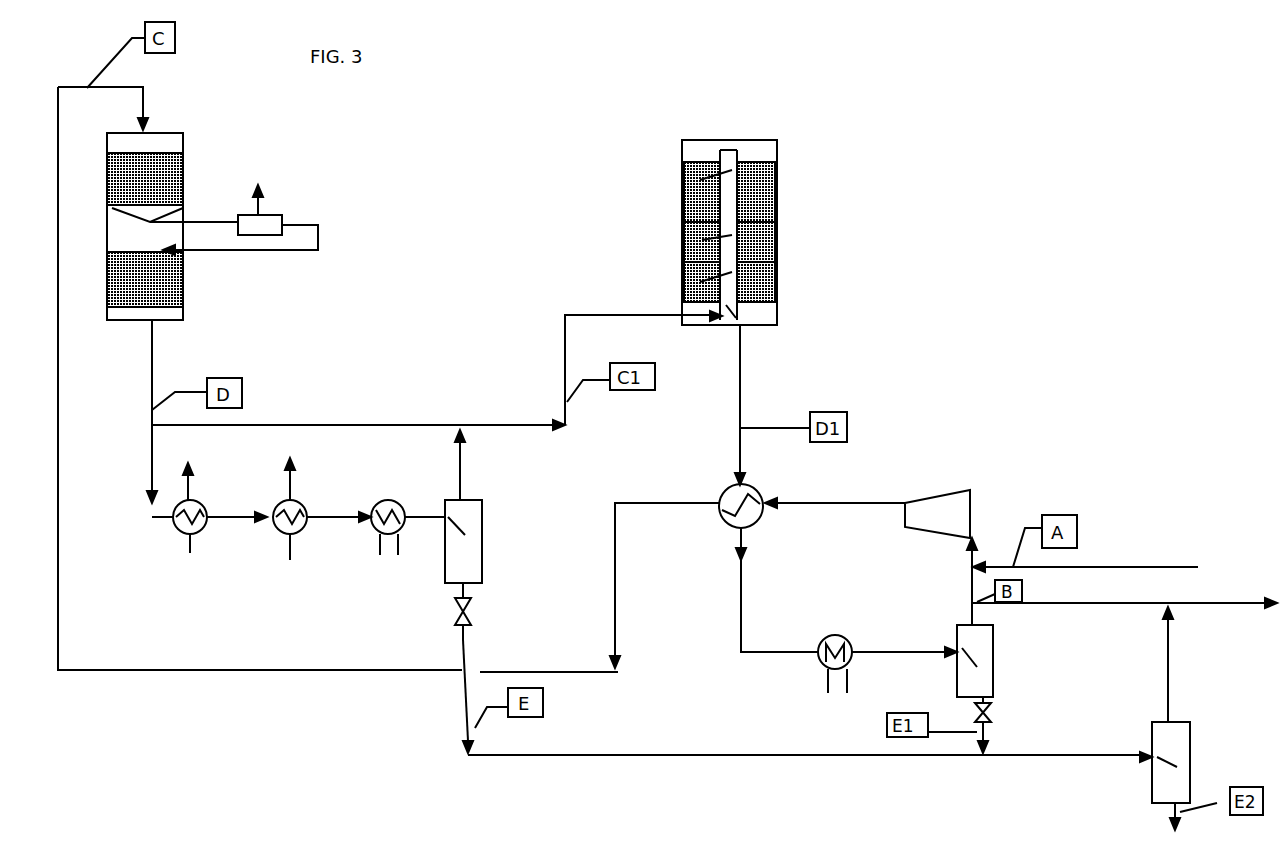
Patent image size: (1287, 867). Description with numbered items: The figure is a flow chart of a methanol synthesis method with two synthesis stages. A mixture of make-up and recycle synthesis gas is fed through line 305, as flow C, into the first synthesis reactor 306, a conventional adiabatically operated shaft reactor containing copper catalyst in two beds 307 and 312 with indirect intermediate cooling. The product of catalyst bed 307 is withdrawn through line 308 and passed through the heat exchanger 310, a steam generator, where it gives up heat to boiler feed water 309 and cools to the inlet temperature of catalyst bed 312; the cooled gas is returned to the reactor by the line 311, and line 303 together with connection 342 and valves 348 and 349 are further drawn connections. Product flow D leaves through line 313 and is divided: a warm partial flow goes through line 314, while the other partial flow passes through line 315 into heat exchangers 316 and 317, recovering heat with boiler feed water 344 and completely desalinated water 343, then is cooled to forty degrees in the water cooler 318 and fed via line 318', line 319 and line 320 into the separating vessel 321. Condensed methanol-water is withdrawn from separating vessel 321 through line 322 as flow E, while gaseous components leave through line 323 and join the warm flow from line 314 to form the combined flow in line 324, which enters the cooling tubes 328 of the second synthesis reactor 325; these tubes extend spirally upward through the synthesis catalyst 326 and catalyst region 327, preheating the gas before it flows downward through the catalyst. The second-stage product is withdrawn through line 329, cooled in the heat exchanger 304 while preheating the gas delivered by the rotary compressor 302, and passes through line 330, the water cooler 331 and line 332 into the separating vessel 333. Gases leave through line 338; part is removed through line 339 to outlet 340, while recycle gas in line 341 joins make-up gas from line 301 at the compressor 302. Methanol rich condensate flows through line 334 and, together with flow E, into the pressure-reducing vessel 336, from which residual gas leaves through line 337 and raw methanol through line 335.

The make-up gas line 301 is at (1083, 565).
The rotary compressor 302 is at (970, 493).
The compressed gas line 303 is at (852, 502).
The heat exchanger 304 is at (757, 492).
The line 305 is at (617, 612).
The first synthesis reactor 306 is at (183, 145).
The catalyst bed 307 is at (107, 170).
The line 308 is at (212, 222).
The boiler feed water 309 is at (270, 203).
The heat exchanger 310 is at (288, 222).
The return line 311 is at (255, 252).
The catalyst bed 312 is at (107, 285).
The line 313 is at (152, 372).
The line 314 is at (337, 422).
The line 315 is at (150, 465).
The heat exchanger 316 is at (175, 523).
The heat exchanger 317 is at (277, 527).
The water cooler 318 is at (363, 527).
The line 318' is at (243, 503).
The line 319 is at (342, 515).
The line 320 is at (423, 507).
The separating vessel 321 is at (462, 562).
The line 322 is at (470, 653).
The line 323 is at (462, 460).
The line 324 is at (563, 373).
The adsorber vessel 325 is at (773, 148).
The synthesis catalyst 326 is at (777, 193).
The adsorbent bed 327 is at (777, 247).
The cooling tubes 328 is at (777, 280).
The line 329 is at (740, 353).
The line 330 is at (748, 583).
The water cooler 331 is at (822, 637).
The line 332 is at (904, 642).
The separating vessel 333 is at (995, 685).
The line 334 is at (1005, 737).
The line 335 is at (1154, 820).
The pressure-reducing vessel 336 is at (1190, 750).
The line 337 is at (1168, 703).
The line 338 is at (968, 618).
The line 339 is at (1088, 605).
The product outlet 340 is at (1263, 593).
The line 341 is at (968, 585).
The recycle line 342 is at (968, 557).
The completely desalinated water 343 is at (292, 482).
The boiler feed water 344 is at (192, 488).
The valve 348 is at (1003, 714).
The valve 349 is at (455, 610).